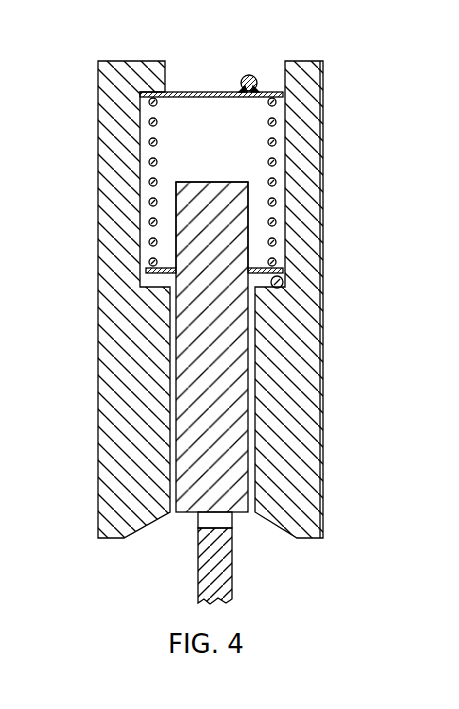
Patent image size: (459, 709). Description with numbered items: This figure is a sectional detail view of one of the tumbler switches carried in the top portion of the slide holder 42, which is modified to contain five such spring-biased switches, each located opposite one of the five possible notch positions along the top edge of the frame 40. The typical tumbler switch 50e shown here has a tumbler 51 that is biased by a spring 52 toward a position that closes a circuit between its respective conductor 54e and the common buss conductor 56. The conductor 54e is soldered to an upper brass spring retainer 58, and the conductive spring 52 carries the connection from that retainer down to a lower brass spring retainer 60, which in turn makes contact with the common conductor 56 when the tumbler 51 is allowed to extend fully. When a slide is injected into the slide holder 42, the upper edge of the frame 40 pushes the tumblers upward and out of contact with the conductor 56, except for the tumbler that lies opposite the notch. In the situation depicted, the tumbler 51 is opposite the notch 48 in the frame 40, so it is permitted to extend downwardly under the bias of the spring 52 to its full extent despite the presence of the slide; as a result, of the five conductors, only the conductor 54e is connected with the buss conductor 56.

The slide holder 42 is at (313, 180).
The brass spring retainer 58 is at (188, 92).
The conductor 54e is at (247, 75).
The spring 52 is at (268, 141).
The tumbler 51 is at (192, 200).
The tumbler switch 50e is at (188, 325).
The lower brass spring retainer 60 is at (285, 268).
The common buss conductor 56 is at (284, 284).
The notch 48 is at (232, 520).
The frame 40 is at (198, 580).